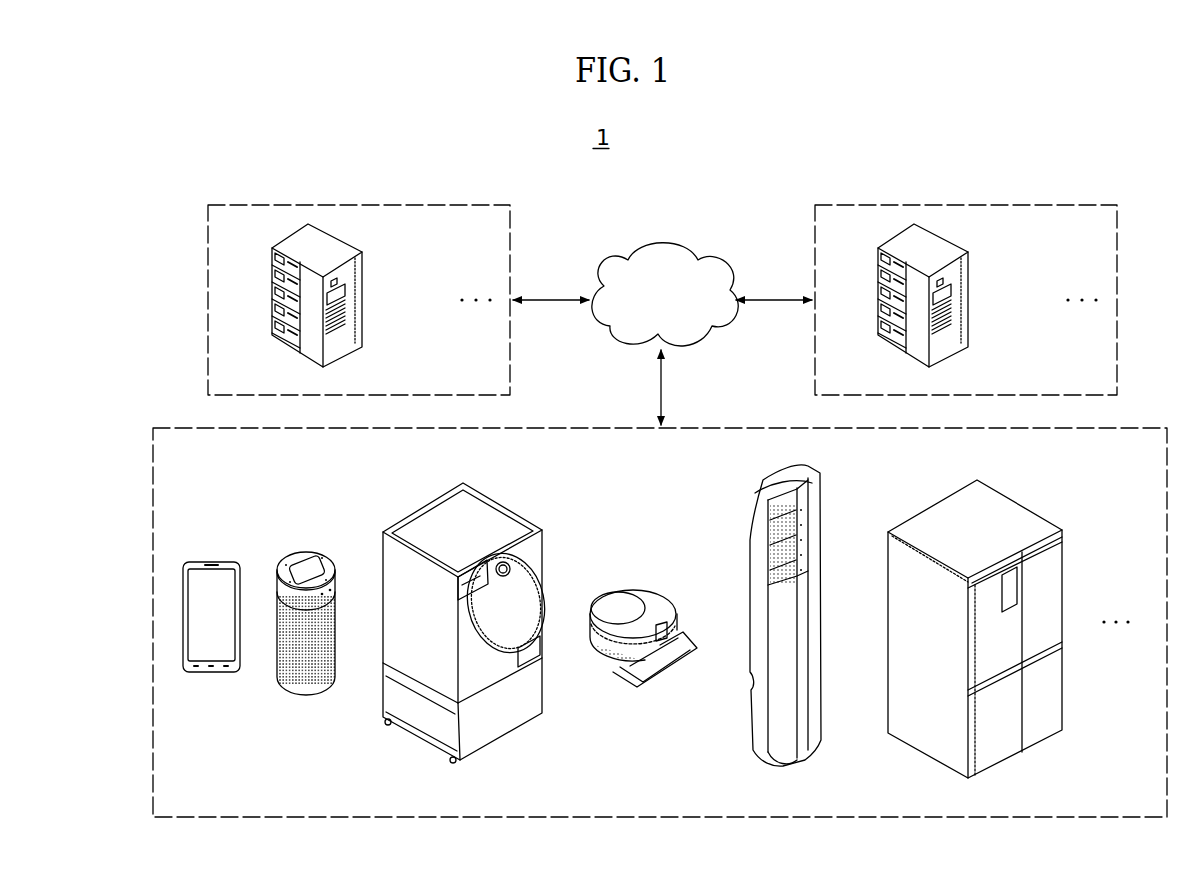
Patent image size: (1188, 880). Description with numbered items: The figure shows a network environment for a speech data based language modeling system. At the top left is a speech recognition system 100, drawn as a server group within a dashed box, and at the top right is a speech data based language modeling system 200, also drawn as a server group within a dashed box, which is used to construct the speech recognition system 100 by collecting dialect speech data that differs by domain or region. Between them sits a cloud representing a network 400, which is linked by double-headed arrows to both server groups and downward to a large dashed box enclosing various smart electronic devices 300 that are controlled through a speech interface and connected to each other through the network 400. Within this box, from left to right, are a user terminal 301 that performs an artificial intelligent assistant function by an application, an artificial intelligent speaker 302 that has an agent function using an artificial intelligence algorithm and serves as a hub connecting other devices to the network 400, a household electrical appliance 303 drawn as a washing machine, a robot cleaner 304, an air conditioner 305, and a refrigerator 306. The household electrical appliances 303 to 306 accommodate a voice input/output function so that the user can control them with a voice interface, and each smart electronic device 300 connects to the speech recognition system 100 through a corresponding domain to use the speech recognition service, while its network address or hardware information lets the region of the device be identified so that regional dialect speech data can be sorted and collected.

The speech recognition system 100 is at (465, 204).
The speech data based language modeling system 200 is at (1073, 204).
The smart electronic devices 300 is at (1123, 428).
The user terminal 301 is at (211, 560).
The artificial intelligent speaker 302 is at (320, 553).
The household electrical appliance 303 is at (502, 504).
The robot cleaner 304 is at (657, 585).
The air conditioner 305 is at (822, 493).
The refrigerator 306 is at (1026, 507).
The network 400 is at (661, 250).